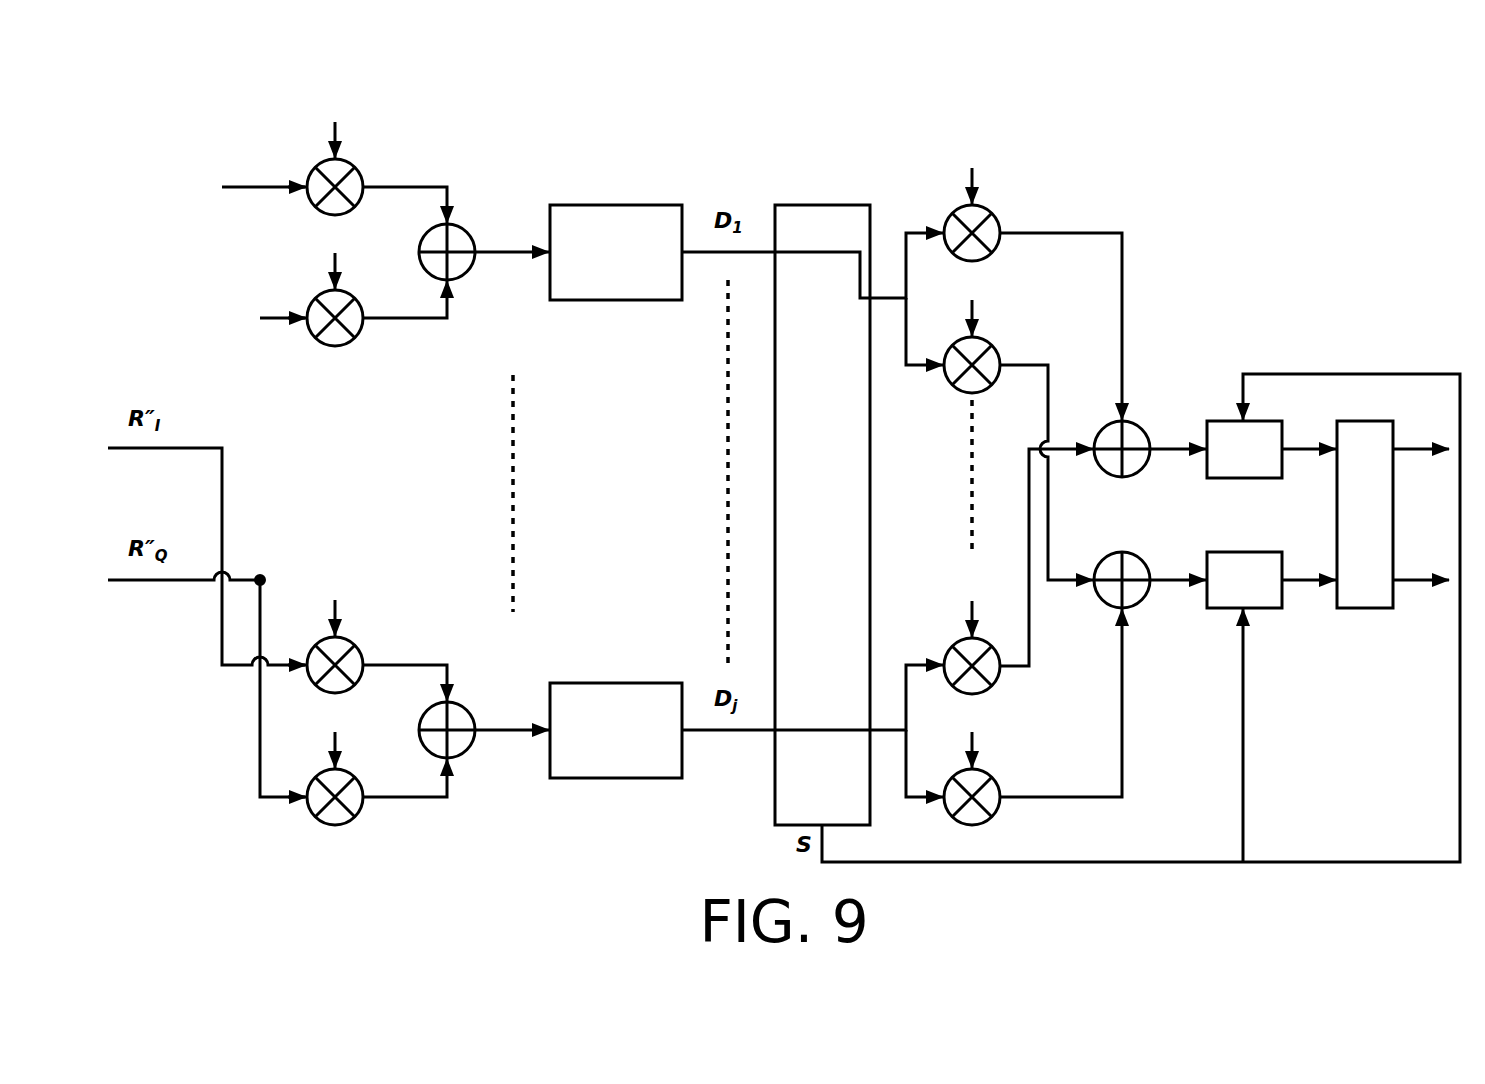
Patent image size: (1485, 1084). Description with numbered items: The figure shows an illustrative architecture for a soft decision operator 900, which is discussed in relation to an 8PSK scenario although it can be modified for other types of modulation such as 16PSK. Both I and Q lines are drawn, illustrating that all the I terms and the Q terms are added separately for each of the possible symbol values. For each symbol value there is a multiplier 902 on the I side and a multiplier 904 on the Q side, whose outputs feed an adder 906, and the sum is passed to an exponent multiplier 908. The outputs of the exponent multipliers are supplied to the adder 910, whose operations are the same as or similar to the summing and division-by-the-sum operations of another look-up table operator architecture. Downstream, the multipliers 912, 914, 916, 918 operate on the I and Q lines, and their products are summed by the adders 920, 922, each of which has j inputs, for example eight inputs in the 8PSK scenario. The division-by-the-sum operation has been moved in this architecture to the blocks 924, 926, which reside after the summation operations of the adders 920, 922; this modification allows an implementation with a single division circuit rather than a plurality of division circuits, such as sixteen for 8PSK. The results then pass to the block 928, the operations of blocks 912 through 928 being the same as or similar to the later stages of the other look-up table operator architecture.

The soft decision operator 900 is at (1288, 126).
The multiplier 902 is at (356, 171).
The multiplier 904 is at (358, 334).
The adder 906 is at (466, 232).
The exponent multiplier 908 is at (595, 296).
The adder 910 is at (803, 541).
The multiplier 912 is at (951, 213).
The multiplier 914 is at (951, 386).
The multiplier 916 is at (950, 646).
The multiplier 918 is at (951, 814).
The adder 920 is at (1142, 468).
The adder 922 is at (1144, 596).
The division block 924 is at (1224, 462).
The division block 926 is at (1224, 593).
The output block 928 is at (1345, 527).